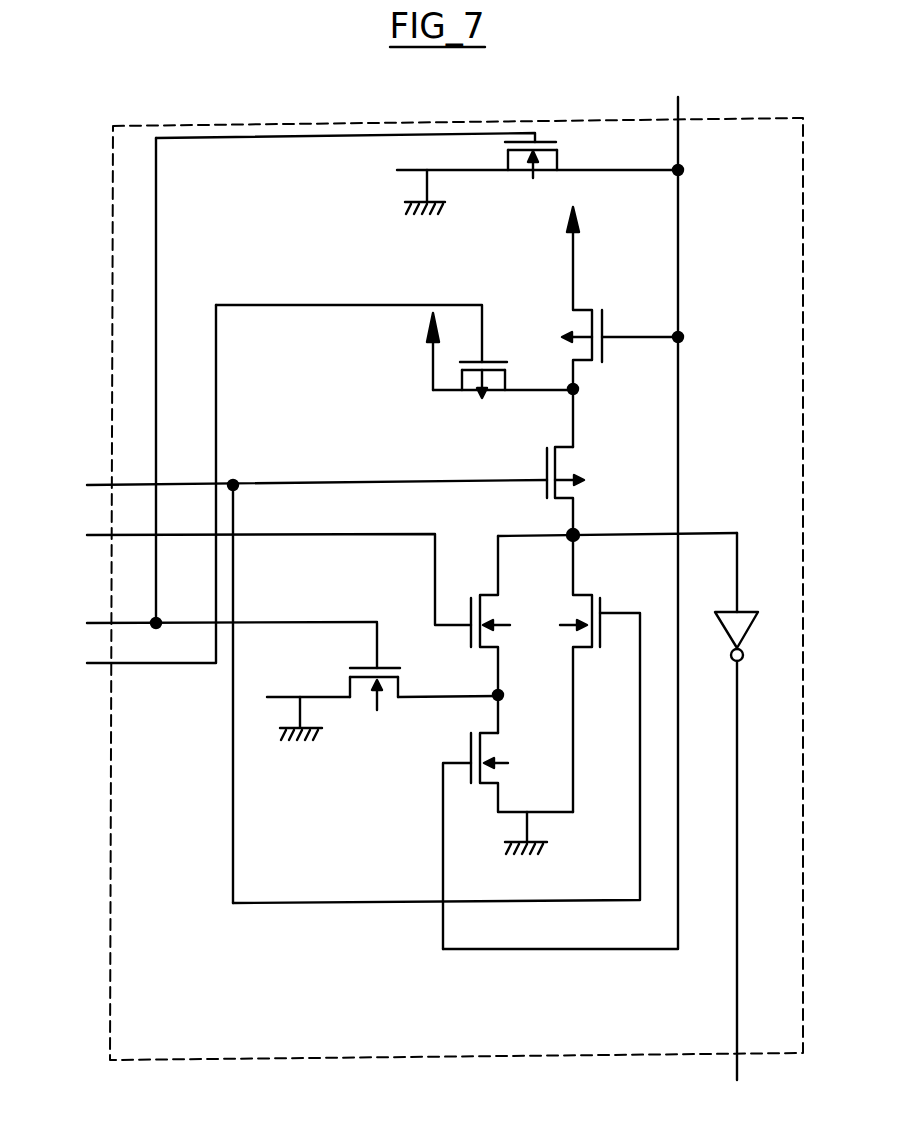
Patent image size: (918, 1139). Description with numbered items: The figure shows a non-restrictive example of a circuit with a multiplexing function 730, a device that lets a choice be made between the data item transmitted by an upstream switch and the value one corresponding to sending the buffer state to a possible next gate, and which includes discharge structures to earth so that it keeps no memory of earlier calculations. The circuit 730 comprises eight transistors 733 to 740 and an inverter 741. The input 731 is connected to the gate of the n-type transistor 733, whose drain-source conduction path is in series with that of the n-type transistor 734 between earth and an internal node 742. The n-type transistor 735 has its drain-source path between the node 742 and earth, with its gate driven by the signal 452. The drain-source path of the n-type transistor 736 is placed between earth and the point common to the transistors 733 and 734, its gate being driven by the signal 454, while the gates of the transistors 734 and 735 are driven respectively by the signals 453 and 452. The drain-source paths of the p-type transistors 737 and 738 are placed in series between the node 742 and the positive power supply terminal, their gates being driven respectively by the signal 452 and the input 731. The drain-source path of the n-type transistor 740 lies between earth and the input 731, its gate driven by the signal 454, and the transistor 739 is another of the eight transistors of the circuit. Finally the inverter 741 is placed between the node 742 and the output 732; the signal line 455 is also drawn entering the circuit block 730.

The multiplexer device 730 is at (113, 222).
The input 731 is at (678, 133).
The output 732 is at (737, 1033).
The transistor T 733 type n 733 is at (508, 841).
The transistor T 734 type n 734 is at (507, 634).
The transistor T 735 type n 735 is at (436, 719).
The transistor T 736 type n 736 is at (385, 683).
The transistor T 737 type p 737 is at (587, 491).
The transistor T 738 type p 738 is at (620, 327).
The transistor T 739 is at (397, 369).
The transistor T 740 type n 740 is at (417, 173).
The inverter 741 is at (721, 597).
The internal node 742 is at (617, 523).
The signal 452 is at (291, 686).
The signal 453 is at (253, 572).
The signal 454 is at (206, 388).
The input signal line 455 is at (125, 492).